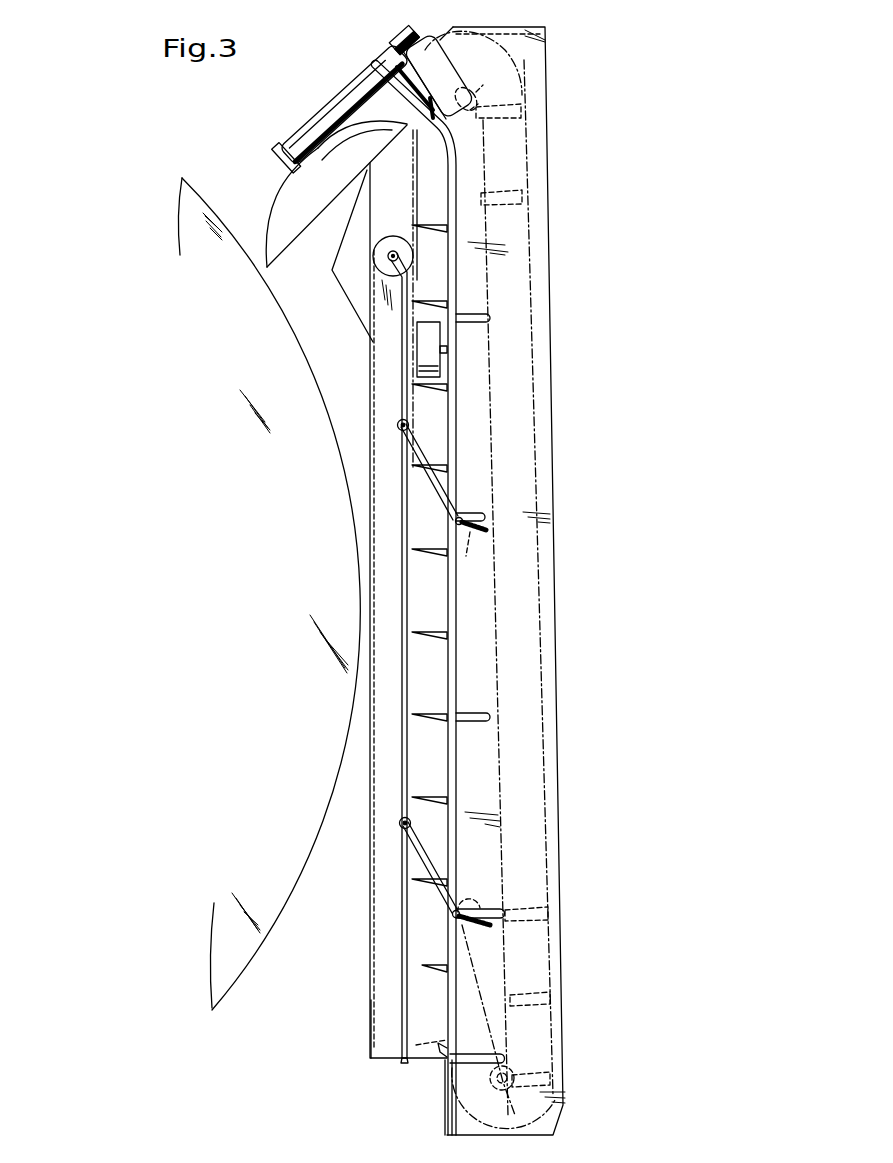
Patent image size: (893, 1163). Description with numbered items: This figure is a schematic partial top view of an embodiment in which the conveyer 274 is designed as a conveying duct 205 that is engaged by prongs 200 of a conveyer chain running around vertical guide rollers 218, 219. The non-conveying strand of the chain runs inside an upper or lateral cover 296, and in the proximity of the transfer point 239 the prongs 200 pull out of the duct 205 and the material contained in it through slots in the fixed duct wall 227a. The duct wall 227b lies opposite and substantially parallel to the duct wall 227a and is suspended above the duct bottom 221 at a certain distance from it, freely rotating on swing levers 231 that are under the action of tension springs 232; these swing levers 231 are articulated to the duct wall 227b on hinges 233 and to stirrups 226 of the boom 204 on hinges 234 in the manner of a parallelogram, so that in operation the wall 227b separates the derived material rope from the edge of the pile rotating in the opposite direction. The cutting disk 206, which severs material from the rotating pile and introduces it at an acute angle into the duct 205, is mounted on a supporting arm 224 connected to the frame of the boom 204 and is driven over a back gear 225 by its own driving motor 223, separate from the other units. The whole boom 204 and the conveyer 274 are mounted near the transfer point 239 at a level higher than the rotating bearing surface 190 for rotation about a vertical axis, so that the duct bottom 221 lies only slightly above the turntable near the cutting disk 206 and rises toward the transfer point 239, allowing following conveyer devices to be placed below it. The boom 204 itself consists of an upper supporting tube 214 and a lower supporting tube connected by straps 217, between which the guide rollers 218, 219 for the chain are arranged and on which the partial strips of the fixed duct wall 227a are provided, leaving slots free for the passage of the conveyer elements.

The rotating bearing surface 190 is at (259, 377).
The prongs 200 is at (500, 192).
The boom 204 is at (448, 1004).
The conveying duct 205 is at (413, 584).
The cutting disk 206 is at (283, 183).
The upper supporting tube 214 is at (458, 278).
The strap 217 is at (477, 713).
The guide roller 218 is at (519, 1095).
The guide roller 219 is at (478, 105).
The duct bottom 221 is at (377, 390).
The driving motor 223 is at (472, 43).
The supporting arm 224 is at (313, 120).
The back gear 225 is at (395, 55).
The stirrups 226 is at (479, 515).
The duct wall 227a is at (445, 1116).
The duct wall 227b is at (372, 1003).
The swing levers 231 is at (431, 450).
The tension springs 232 is at (486, 823).
The hinges 233 is at (403, 431).
The hinges 234 is at (459, 522).
The transfer point 239 is at (408, 1065).
The conveyer 274 is at (529, 595).
The cover 296 is at (547, 272).